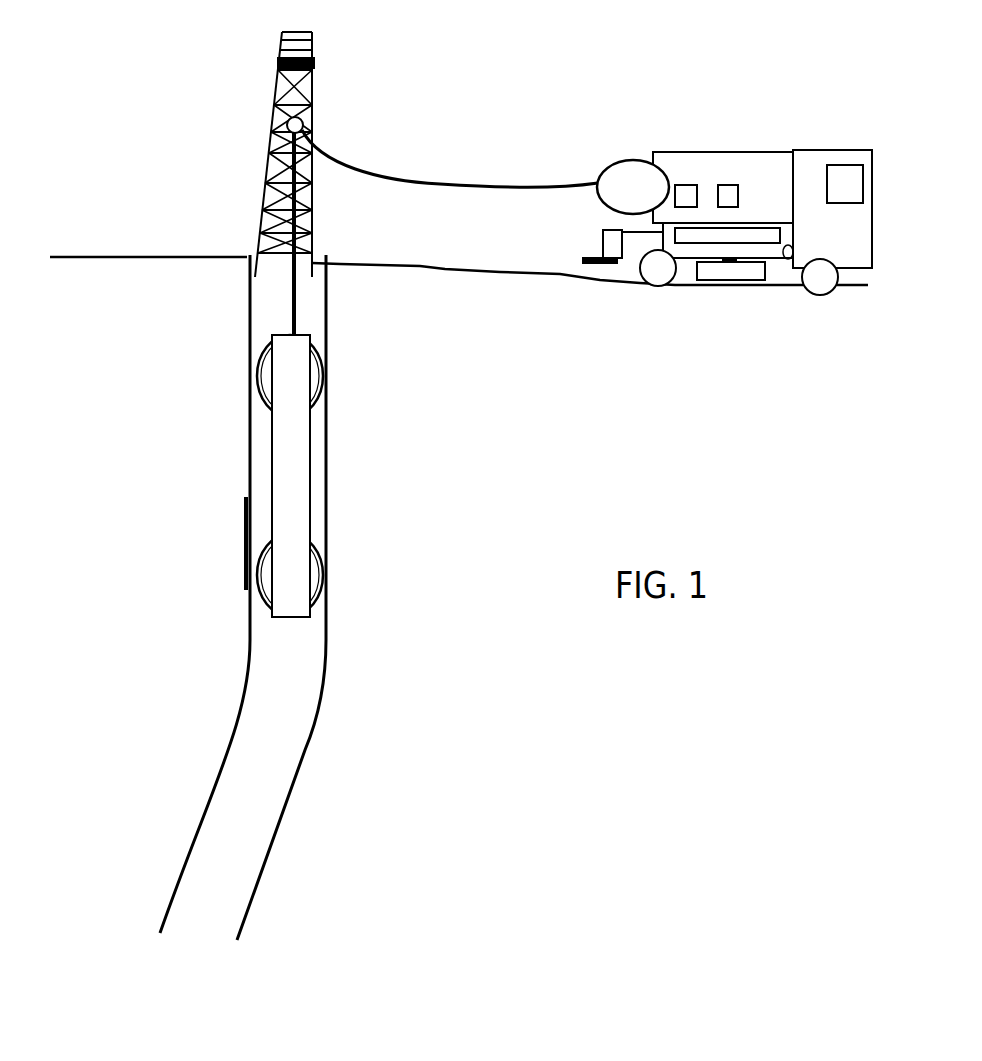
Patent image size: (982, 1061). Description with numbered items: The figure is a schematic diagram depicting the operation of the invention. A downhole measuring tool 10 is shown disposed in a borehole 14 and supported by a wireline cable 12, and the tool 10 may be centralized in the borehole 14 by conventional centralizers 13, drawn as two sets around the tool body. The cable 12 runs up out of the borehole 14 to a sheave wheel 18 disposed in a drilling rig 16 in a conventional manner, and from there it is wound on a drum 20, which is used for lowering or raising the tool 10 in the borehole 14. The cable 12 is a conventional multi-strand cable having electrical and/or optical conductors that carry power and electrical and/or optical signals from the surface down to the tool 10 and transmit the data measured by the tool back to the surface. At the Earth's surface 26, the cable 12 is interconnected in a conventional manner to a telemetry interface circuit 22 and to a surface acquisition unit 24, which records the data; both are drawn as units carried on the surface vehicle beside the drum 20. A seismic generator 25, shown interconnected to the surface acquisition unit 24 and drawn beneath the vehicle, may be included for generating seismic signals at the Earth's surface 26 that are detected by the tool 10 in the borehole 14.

The downhole measuring tool 10 is at (270, 462).
The wireline cable 12 is at (297, 302).
The centralizers 13 is at (328, 383).
The borehole 14 is at (327, 650).
The drilling rig 16 is at (273, 130).
The sheave wheel 18 is at (303, 120).
The drum 20 is at (622, 160).
The telemetry interface circuit 22 is at (687, 185).
The surface acquisition unit 24 is at (735, 185).
The seismic generator 25 is at (733, 287).
The Earth's surface 26 is at (101, 257).